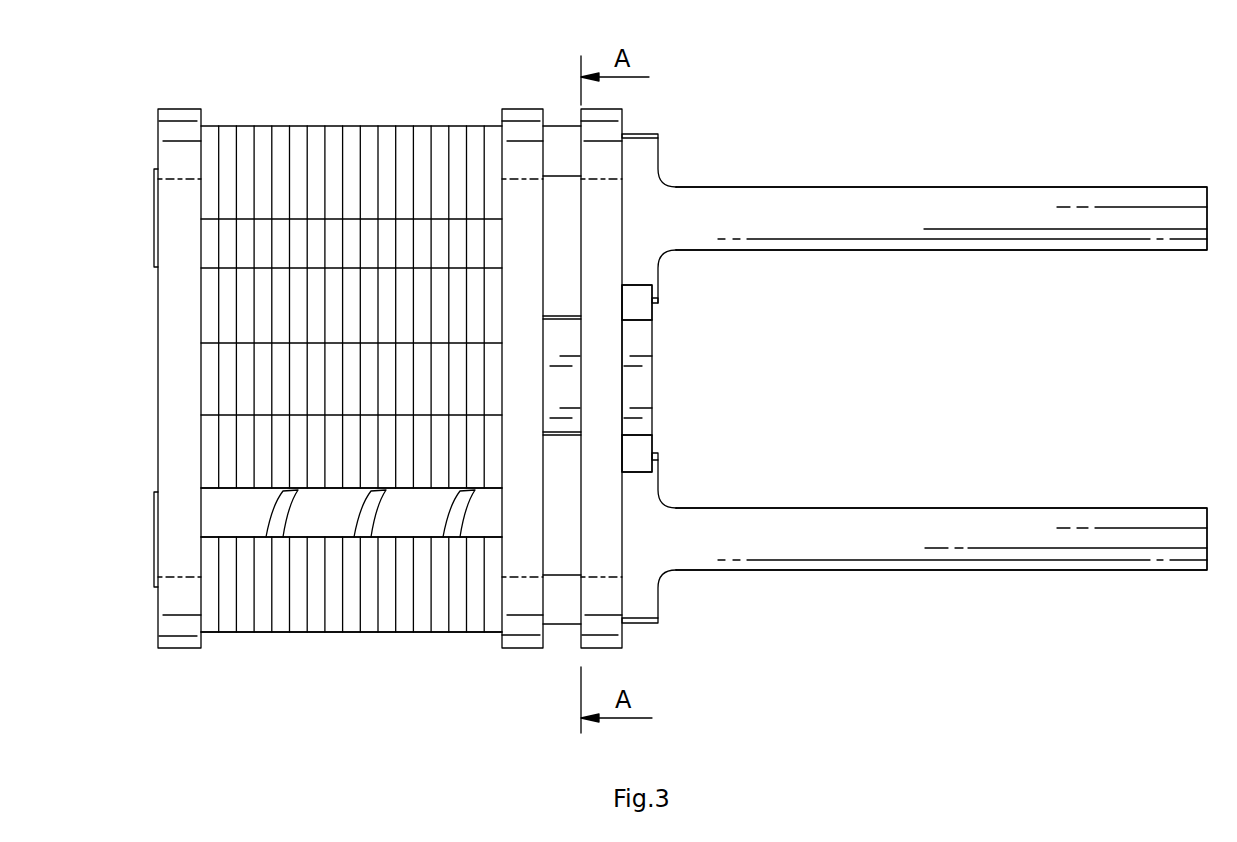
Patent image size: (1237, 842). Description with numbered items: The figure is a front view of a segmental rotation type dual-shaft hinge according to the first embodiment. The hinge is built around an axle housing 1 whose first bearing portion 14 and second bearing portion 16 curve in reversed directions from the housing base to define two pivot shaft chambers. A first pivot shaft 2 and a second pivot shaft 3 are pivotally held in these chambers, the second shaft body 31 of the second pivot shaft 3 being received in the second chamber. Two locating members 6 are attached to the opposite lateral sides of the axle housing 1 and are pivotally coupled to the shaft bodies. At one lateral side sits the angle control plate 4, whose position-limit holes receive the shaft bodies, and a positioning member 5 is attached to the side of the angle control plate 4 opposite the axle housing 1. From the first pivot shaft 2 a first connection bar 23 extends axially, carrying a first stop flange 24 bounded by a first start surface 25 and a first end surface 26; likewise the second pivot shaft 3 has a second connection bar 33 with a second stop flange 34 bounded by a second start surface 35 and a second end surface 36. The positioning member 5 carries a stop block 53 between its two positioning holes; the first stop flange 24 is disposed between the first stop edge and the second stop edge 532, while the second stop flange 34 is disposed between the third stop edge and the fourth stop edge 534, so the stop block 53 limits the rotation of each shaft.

The axle housing 1 is at (341, 104).
The first bearing portion 14 is at (316, 123).
The second bearing portion 16 is at (352, 632).
The second shaft body 31 is at (220, 507).
The locating members 6 is at (521, 108).
The angle control plate 4 is at (548, 619).
The positioning member 5 is at (616, 253).
The first end surface 26 is at (642, 133).
The first stop flange 24 is at (662, 148).
The first connection bar 23 is at (982, 185).
The first pivot shaft 2 is at (1098, 174).
The first start surface 25 is at (658, 302).
The stop block 53 is at (652, 369).
The second stop edge 532 is at (647, 310).
The fourth stop edge 534 is at (645, 445).
The second start surface 35 is at (657, 457).
The second stop flange 34 is at (658, 478).
The second connection bar 33 is at (930, 507).
The second pivot shaft 3 is at (1083, 495).
The second end surface 36 is at (640, 623).